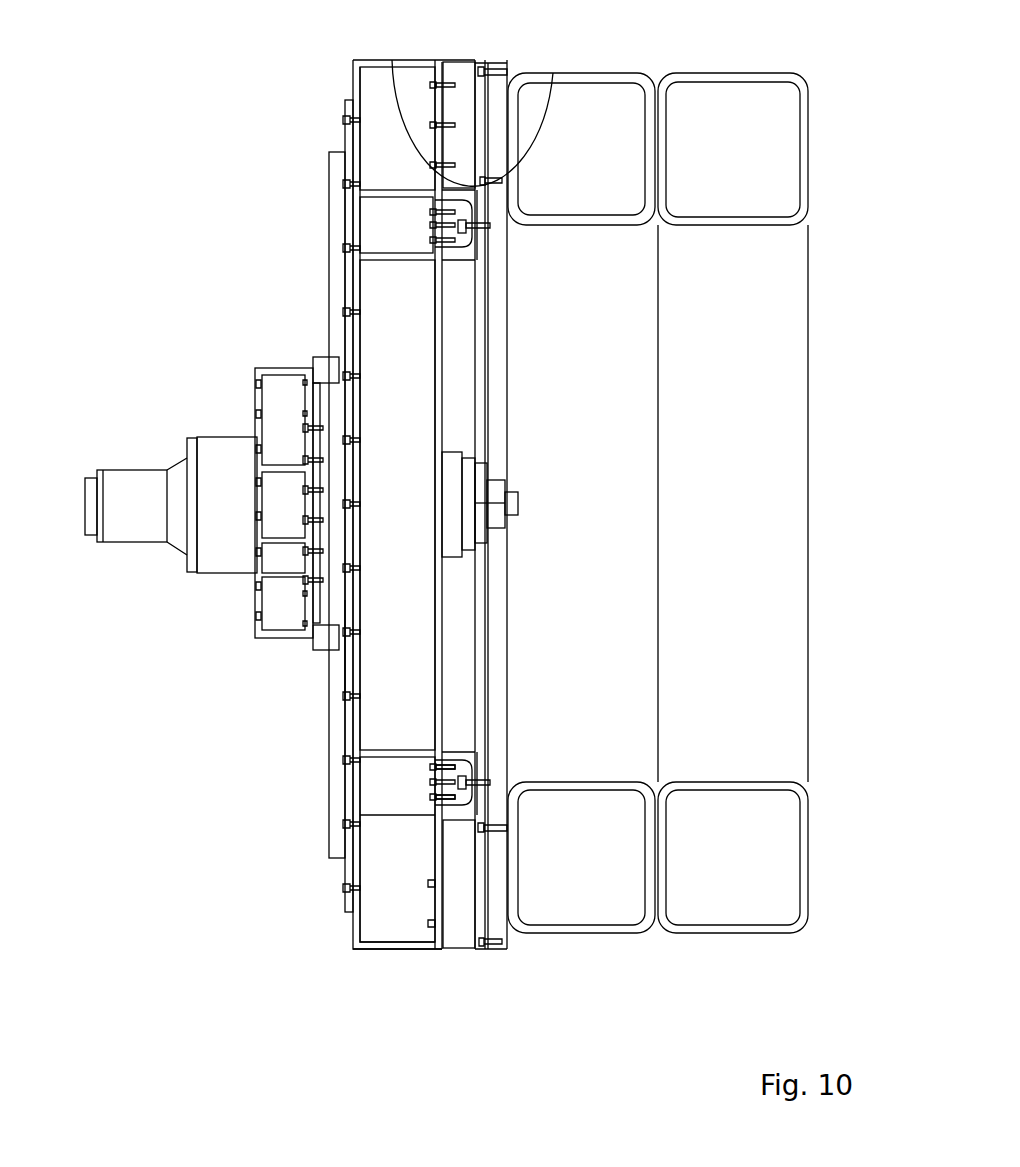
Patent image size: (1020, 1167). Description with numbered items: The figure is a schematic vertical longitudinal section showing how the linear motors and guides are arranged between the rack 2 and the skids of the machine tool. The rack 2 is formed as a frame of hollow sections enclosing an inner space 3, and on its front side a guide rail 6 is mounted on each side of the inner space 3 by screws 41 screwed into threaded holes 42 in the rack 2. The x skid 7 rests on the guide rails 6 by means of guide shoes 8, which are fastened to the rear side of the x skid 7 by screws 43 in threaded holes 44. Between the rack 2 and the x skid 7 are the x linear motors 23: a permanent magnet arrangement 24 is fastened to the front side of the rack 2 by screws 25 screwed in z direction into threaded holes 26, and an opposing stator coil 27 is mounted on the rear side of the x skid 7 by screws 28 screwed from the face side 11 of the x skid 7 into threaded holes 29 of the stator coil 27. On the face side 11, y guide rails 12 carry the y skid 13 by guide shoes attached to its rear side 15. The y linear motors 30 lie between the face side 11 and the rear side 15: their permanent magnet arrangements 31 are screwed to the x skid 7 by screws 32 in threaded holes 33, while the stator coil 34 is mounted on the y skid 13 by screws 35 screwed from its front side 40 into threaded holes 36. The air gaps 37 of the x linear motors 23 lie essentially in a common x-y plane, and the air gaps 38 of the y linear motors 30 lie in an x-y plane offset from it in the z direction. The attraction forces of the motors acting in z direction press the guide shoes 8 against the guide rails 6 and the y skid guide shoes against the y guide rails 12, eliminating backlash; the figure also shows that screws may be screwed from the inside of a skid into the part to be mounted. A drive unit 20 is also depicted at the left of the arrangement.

The rack 2 is at (812, 142).
The inner space 3 is at (752, 496).
The guide rail 6 is at (470, 232).
The x skid 7 is at (400, 950).
The guide shoes 8 is at (462, 765).
The face side 11 is at (353, 95).
The y guide rails 12 is at (335, 190).
The y skid 13 is at (253, 643).
The rear side 15 is at (307, 498).
The motor 20 is at (122, 503).
The x linear motors 23 is at (465, 950).
The permanent magnet arrangements 24 is at (487, 68).
The screws 25 is at (490, 65).
The threaded holes 26 is at (504, 70).
The stator coil 27 is at (460, 878).
The screws 28 is at (432, 83).
The threaded holes 29 is at (445, 85).
The y linear motors 30 is at (332, 605).
The permanent magnet arrangements 31 is at (345, 408).
The screws 32 is at (353, 503).
The threaded holes 33 is at (357, 377).
The stator coil 34 is at (303, 427).
The screws 35 is at (314, 428).
The threaded holes 36 is at (318, 430).
The air gaps 37 is at (473, 60).
The air gaps 38 is at (342, 650).
The front side 40 is at (253, 605).
The screws 41 is at (485, 828).
The threaded holes 42 is at (498, 822).
The screws 43 is at (442, 780).
The threaded holes 44 is at (440, 790).